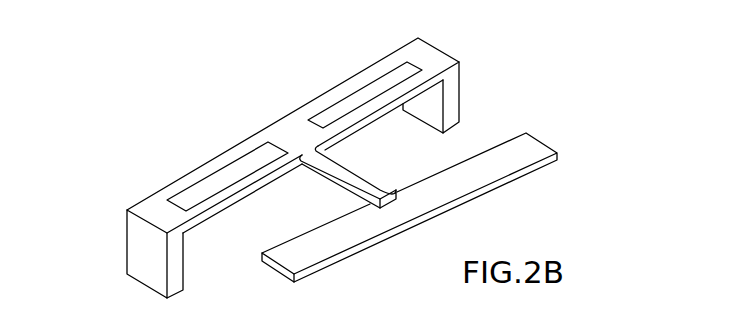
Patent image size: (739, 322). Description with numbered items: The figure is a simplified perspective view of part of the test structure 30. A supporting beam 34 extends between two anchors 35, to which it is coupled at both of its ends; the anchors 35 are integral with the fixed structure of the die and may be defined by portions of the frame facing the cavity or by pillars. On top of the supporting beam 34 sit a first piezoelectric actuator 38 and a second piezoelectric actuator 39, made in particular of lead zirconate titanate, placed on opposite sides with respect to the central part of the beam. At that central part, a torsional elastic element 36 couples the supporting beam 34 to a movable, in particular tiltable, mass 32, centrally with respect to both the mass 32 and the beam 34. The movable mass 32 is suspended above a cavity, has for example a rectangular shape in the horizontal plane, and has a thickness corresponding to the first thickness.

The test structure 30 is at (549, 94).
The movable mass 32 is at (518, 176).
The supporting beam 34 is at (292, 133).
The anchors 35 is at (138, 231).
The torsional elastic element 36 is at (348, 170).
The first piezoelectric actuator 38 is at (358, 92).
The second piezoelectric actuator 39 is at (220, 180).